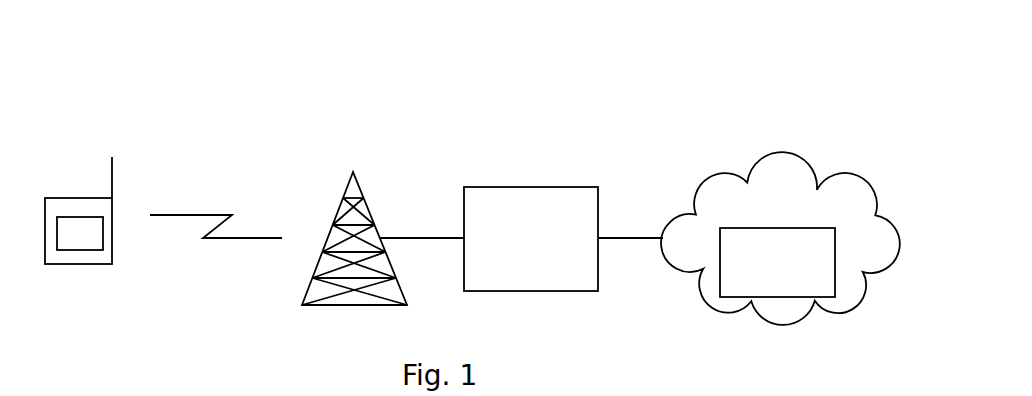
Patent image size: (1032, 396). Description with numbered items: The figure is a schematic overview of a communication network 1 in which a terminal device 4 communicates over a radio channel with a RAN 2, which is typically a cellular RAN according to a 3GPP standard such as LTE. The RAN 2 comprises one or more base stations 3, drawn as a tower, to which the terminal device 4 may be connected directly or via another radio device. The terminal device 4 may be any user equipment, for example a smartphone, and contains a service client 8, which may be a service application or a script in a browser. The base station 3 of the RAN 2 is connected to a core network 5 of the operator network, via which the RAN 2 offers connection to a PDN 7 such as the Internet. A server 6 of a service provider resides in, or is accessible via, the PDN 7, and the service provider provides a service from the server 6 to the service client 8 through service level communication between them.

The communication network 1 is at (736, 106).
The RAN 2 is at (437, 136).
The base station 3 is at (366, 203).
The terminal device 4 is at (88, 198).
The core network 5 is at (523, 236).
The server 6 is at (770, 259).
The PDN 7 is at (737, 217).
The service client 8 is at (88, 240).